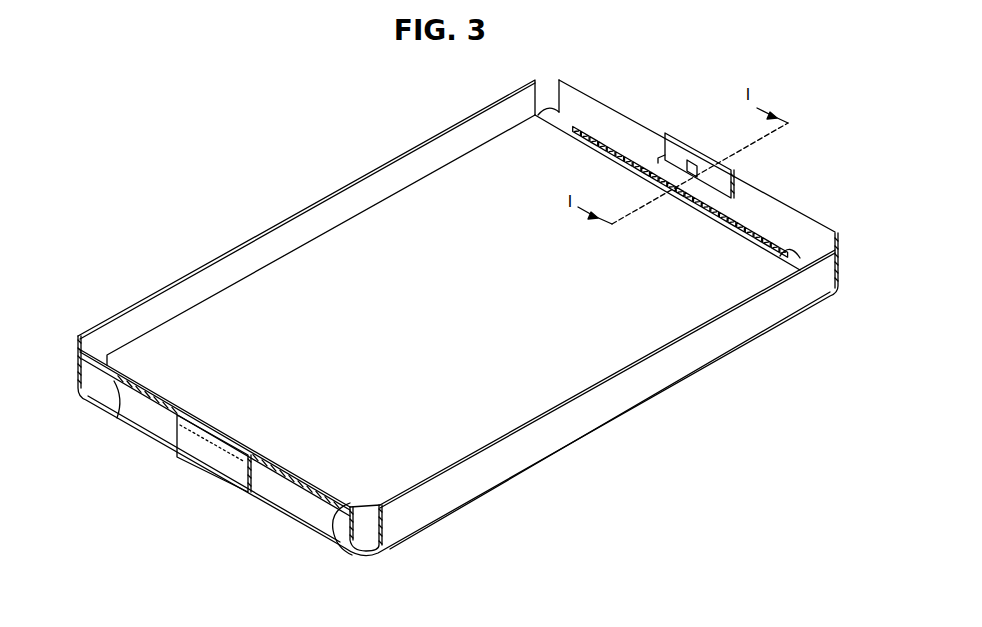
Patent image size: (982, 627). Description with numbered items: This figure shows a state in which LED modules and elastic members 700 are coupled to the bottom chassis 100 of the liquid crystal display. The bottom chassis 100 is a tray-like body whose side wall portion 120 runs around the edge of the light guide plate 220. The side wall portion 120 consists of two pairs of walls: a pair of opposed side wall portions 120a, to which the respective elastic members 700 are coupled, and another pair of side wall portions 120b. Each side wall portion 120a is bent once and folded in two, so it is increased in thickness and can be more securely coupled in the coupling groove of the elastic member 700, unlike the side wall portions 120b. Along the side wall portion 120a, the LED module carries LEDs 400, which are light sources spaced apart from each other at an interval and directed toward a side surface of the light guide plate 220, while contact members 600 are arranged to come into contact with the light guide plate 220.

The bottom chassis 100 is at (538, 483).
The side wall portion 120 is at (459, 311).
The side wall portion 120a is at (774, 215).
The side wall portion 120b is at (358, 160).
The light guide plate 220 is at (283, 262).
The LEDs 400 is at (612, 137).
The contact members 600 is at (563, 125).
The elastic member 700 is at (678, 152).